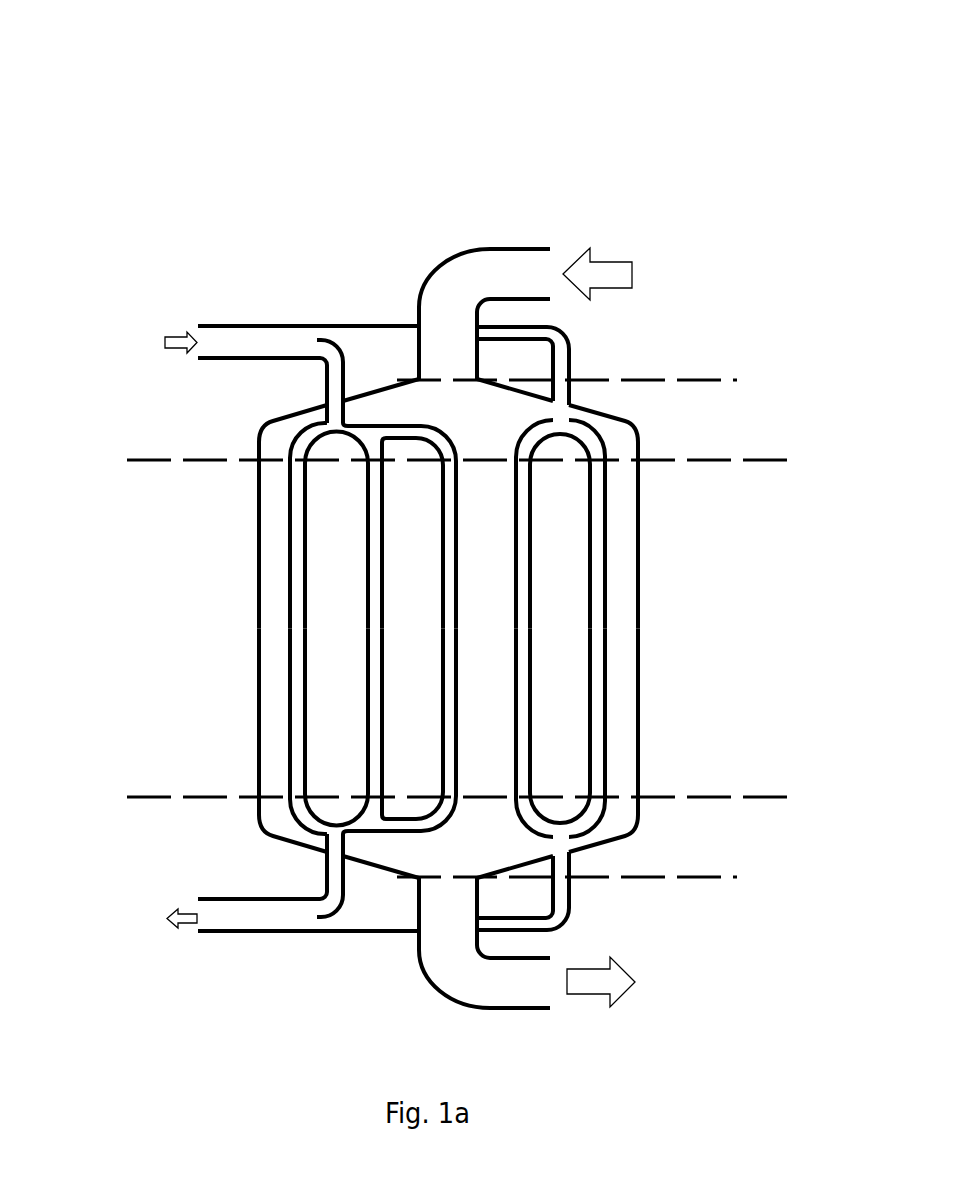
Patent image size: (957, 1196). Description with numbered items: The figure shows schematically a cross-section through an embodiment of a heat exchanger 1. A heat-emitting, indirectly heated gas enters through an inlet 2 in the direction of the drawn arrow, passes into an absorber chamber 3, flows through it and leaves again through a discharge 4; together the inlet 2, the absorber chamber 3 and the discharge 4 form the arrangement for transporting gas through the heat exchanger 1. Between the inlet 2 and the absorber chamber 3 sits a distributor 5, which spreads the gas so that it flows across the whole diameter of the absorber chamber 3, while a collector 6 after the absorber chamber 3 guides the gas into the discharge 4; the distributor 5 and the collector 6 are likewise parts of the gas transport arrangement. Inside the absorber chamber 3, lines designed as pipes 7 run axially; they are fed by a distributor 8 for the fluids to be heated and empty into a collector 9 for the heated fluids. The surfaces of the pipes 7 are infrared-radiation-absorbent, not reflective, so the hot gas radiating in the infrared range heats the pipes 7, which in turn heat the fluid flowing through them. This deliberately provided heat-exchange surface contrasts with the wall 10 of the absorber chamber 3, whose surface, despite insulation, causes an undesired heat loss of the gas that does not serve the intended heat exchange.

The heat exchanger 1 is at (265, 206).
The inlet 2 is at (488, 247).
The absorber chamber 3 is at (790, 461).
The discharge 4 is at (440, 989).
The distributor 5 is at (720, 380).
The collector 6 is at (720, 800).
The pipes 7 is at (309, 617).
The distributor 8 is at (120, 327).
The collector 9 is at (120, 798).
The wall 10 is at (257, 670).